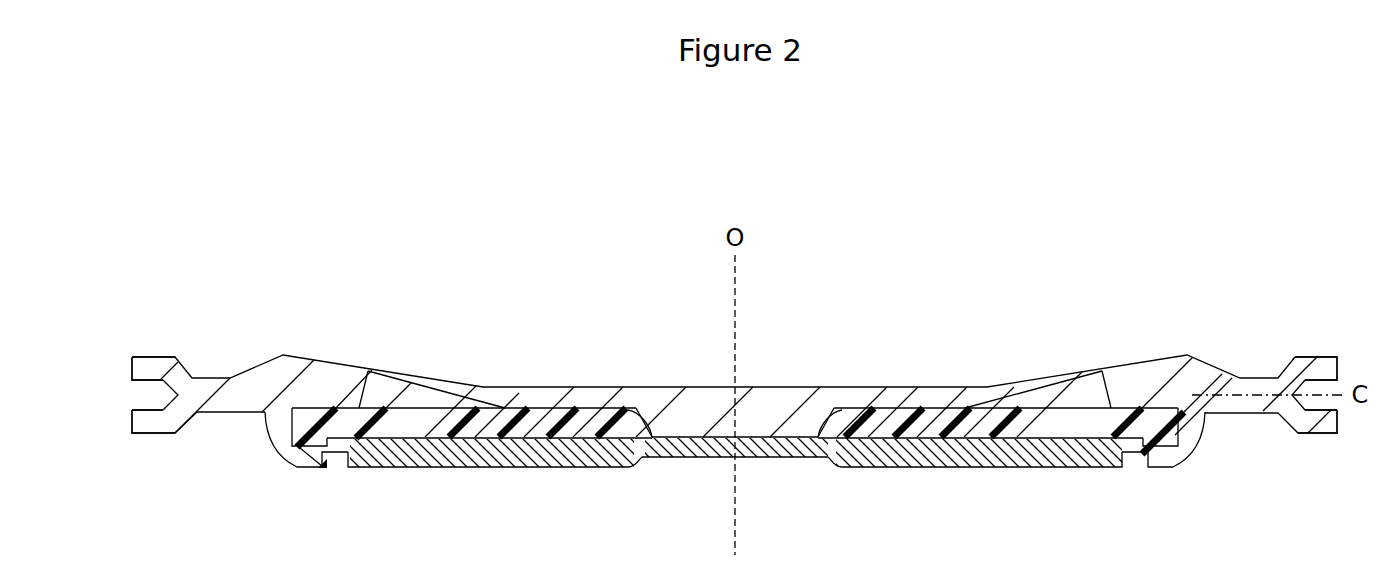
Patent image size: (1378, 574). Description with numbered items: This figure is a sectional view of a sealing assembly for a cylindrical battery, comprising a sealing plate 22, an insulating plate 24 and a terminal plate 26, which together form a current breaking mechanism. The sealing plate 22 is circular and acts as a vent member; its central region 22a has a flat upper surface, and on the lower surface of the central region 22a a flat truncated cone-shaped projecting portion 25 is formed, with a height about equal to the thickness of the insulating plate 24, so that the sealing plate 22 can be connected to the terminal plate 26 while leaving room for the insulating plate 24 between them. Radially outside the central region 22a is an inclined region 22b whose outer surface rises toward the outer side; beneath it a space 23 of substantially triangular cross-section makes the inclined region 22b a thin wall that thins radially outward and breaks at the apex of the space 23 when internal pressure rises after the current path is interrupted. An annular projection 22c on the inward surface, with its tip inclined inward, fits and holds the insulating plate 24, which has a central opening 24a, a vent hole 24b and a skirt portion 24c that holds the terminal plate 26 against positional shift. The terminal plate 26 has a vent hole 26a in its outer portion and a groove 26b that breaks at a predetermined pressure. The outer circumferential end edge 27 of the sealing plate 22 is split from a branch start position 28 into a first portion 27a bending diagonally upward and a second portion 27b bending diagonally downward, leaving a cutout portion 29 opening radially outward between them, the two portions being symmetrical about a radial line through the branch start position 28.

The sealing plate 22 is at (287, 357).
The central region 22a is at (770, 386).
The inclined region 22b is at (448, 380).
The projection 22c is at (293, 458).
The space 23 is at (392, 404).
The insulating plate 24 is at (485, 442).
The opening 24a is at (832, 407).
The vent hole 24b is at (398, 450).
The skirt portion 24c is at (320, 470).
The projecting portion 25 is at (687, 440).
The terminal plate 26 is at (573, 467).
The vent hole 26a is at (455, 458).
The groove 26b is at (650, 437).
The outer circumferential end edge 27 is at (157, 358).
The first portion 27a is at (140, 369).
The second portion 27b is at (140, 422).
The branch start position 28 is at (178, 375).
The cutout portion 29 is at (150, 395).